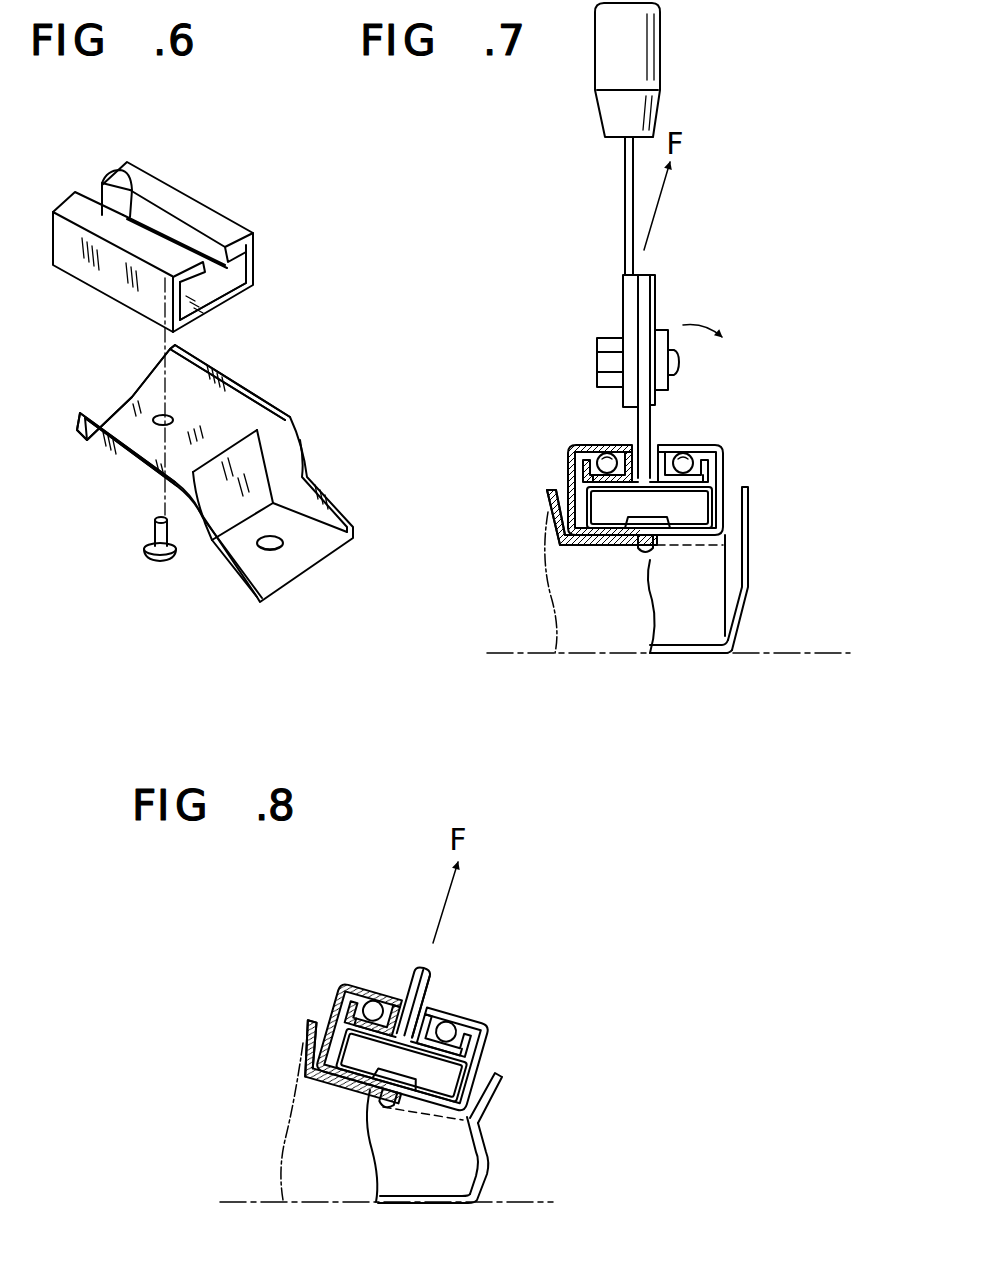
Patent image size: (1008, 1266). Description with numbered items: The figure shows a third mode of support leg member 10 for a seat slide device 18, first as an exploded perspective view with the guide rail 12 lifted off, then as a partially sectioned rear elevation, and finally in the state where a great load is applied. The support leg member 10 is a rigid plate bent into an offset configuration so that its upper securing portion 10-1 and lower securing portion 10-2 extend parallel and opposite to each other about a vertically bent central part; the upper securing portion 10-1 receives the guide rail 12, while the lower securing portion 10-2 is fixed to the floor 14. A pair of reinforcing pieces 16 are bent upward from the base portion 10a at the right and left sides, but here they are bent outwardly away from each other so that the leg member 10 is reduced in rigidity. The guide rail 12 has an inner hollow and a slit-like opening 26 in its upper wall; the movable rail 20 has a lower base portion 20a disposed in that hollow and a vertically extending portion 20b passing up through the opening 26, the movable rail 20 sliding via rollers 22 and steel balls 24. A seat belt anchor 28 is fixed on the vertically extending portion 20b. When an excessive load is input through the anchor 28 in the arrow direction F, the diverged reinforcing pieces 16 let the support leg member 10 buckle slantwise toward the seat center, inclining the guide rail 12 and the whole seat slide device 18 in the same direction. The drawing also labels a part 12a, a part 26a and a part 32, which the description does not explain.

In FIG. 6, the support leg member 10 is at (283, 382).
In FIG. 7, the support leg member 10 is at (788, 553).
In FIG. 8, the support leg member 10 is at (518, 1133).
In FIG. 6, the upper securing portion 10-1 is at (130, 394).
In FIG. 7, the upper securing portion 10-1 is at (551, 536).
In FIG. 8, the upper securing portion 10-1 is at (303, 1076).
In FIG. 6, the lower securing portion 10-2 is at (322, 546).
In FIG. 7, the lower securing portion 10-2 is at (741, 629).
In FIG. 8, the lower securing portion 10-2 is at (483, 1178).
In FIG. 6, the base portion 10a is at (236, 438).
In FIG. 7, the base portion 10a is at (598, 551).
In FIG. 8, the base portion 10a is at (327, 1093).
In FIG. 6, the guide rail 12 is at (241, 215).
In FIG. 7, the guide rail 12 is at (735, 450).
In FIG. 8, the guide rail 12 is at (491, 1040).
In FIG. 6, the side wall of holder member 12a is at (226, 285).
In FIG. 7, the floor 14 is at (790, 653).
In FIG. 8, the floor 14 is at (242, 1201).
In FIG. 6, the reinforcing pieces 16 is at (233, 385).
In FIG. 7, the reinforcing pieces 16 is at (551, 494).
In FIG. 8, the reinforcing pieces 16 is at (310, 1017).
In FIG. 7, the seat slide device 18 is at (640, 421).
In FIG. 8, the seat slide device 18 is at (435, 987).
In FIG. 7, the movable rail 20 is at (634, 421).
In FIG. 8, the movable rail 20 is at (412, 977).
In FIG. 7, the lower base portion 20a is at (708, 472).
In FIG. 8, the lower base portion 20a is at (468, 1046).
In FIG. 7, the vertically extending portion 20b is at (652, 287).
In FIG. 8, the vertically extending portion 20b is at (436, 981).
In FIG. 7, the rollers 22 is at (593, 502).
In FIG. 8, the rollers 22 is at (343, 1048).
In FIG. 7, the steel balls 24 is at (700, 447).
In FIG. 8, the steel balls 24 is at (340, 1000).
In FIG. 6, the slit-like opening 26 is at (125, 213).
In FIG. 7, the slit-like opening 26 is at (664, 454).
In FIG. 8, the slit-like opening 26 is at (437, 1013).
In FIG. 7, the elastic member 26a is at (625, 446).
In FIG. 8, the elastic member 26a is at (400, 990).
In FIG. 7, the seat belt anchor 28 is at (661, 57).
In FIG. 6, the pin 32 is at (143, 533).
In FIG. 7, the pin 32 is at (643, 557).
In FIG. 8, the pin 32 is at (370, 1114).